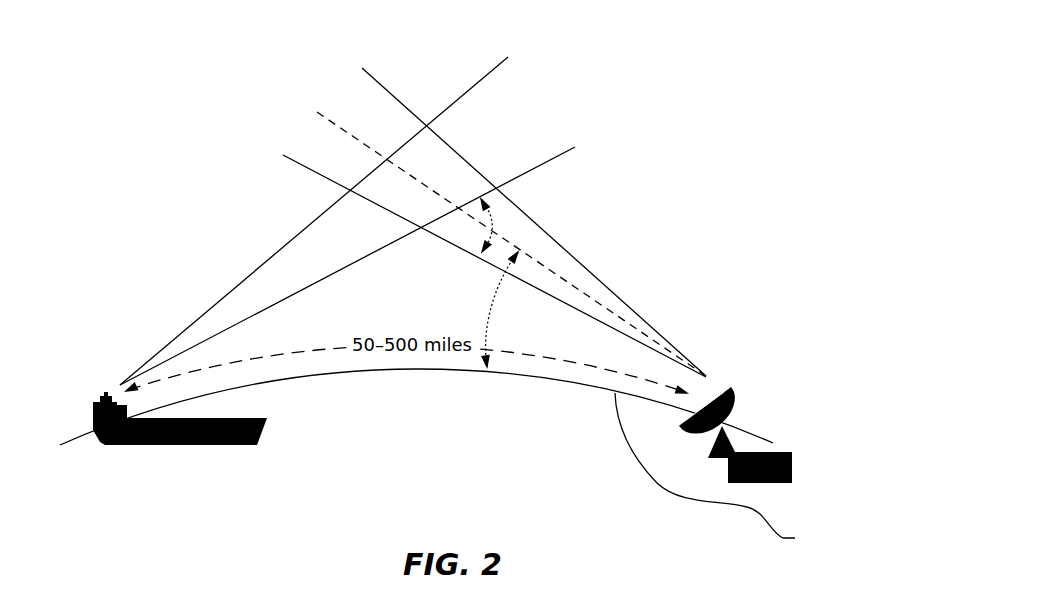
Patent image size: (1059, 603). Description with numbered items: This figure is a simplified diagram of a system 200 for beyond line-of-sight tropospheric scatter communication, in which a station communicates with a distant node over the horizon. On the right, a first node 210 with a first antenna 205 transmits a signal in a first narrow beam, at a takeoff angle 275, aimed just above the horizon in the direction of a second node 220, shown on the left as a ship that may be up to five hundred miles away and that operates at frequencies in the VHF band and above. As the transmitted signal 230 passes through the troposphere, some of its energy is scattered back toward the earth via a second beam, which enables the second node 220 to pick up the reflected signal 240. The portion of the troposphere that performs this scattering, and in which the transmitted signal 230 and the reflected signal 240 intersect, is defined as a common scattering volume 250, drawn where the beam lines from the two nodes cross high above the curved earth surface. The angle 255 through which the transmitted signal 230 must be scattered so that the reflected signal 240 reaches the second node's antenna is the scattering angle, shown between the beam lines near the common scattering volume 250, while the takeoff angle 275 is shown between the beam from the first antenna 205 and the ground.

The communication system 200 is at (765, 103).
The first antenna 205 is at (746, 419).
The first node 210 is at (801, 462).
The second node 220 is at (181, 447).
The transmitted signal 230 is at (511, 244).
The reflected signal 240 is at (413, 266).
The common scattering volume 250 is at (534, 222).
The scattering angle 255 is at (550, 221).
The takeoff angle 275 is at (530, 309).